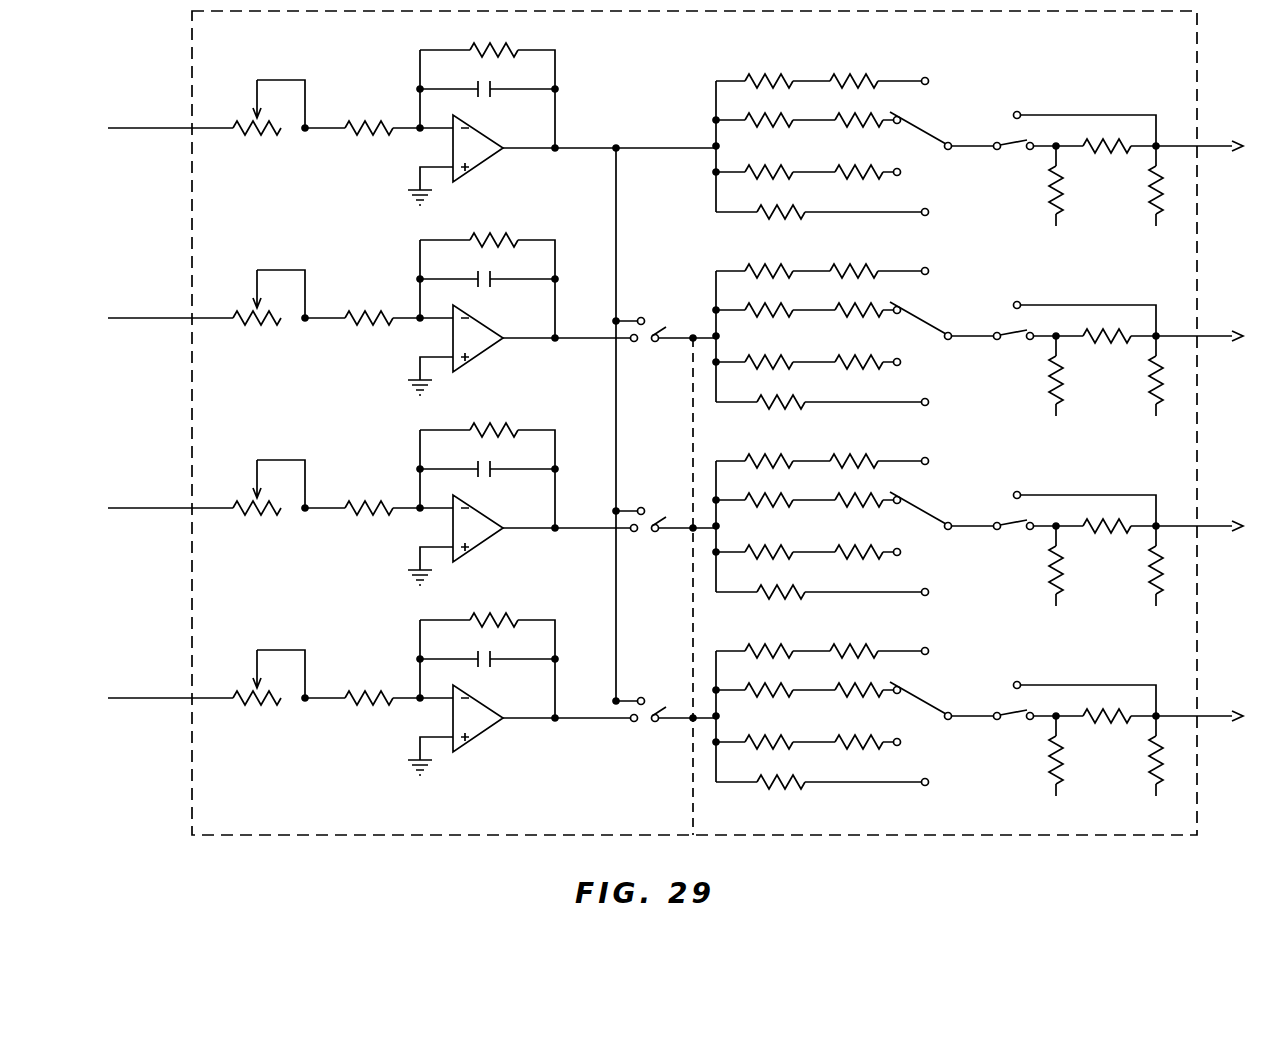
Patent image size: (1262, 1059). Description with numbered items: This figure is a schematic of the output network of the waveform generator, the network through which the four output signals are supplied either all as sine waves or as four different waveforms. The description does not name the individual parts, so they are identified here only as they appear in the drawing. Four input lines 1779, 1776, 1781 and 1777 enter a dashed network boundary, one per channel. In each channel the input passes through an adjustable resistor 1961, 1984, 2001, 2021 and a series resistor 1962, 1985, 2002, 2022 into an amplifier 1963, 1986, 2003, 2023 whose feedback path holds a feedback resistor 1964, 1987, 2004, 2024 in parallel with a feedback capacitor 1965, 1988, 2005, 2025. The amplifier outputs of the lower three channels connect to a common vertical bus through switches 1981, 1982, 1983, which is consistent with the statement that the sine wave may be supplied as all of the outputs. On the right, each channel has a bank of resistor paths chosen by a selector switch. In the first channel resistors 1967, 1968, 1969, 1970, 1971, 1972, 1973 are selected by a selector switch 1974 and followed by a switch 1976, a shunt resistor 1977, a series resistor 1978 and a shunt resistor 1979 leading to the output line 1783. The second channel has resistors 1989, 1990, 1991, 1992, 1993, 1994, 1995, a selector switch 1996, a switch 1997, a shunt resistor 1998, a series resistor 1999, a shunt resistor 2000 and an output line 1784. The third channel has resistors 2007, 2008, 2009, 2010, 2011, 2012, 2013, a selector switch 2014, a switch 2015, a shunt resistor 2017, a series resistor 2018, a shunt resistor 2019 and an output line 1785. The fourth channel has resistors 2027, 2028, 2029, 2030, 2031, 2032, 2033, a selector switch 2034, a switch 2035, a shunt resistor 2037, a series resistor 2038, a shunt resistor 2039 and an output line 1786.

The input line 1779 is at (156, 127).
The input line 1776 is at (158, 317).
The input line 1781 is at (158, 507).
The input line 1777 is at (158, 697).
The potentiometer 1961 is at (254, 133).
The potentiometer 1984 is at (260, 326).
The potentiometer 2001 is at (260, 516).
The potentiometer 2021 is at (266, 706).
The resistor 1962 is at (365, 134).
The resistor 1985 is at (365, 327).
The resistor 2002 is at (366, 502).
The resistor 2022 is at (366, 692).
The operational amplifier 1963 is at (492, 158).
The operational amplifier 1986 is at (487, 350).
The operational amplifier 2003 is at (482, 540).
The operational amplifier 2023 is at (484, 738).
The feedback resistor 1964 is at (490, 43).
The feedback resistor 1987 is at (508, 237).
The feedback resistor 2004 is at (492, 423).
The feedback resistor 2024 is at (494, 614).
The feedback capacitor 1965 is at (490, 93).
The feedback capacitor 1988 is at (490, 288).
The feedback capacitor 2005 is at (488, 479).
The feedback capacitor 2025 is at (490, 668).
The resistor 1967 is at (783, 73).
The resistor 1968 is at (869, 73).
The resistor 1969 is at (790, 118).
The resistor 1970 is at (874, 118).
The resistor 1971 is at (792, 170).
The resistor 1972 is at (882, 170).
The resistor 1973 is at (792, 210).
The selector switch 1974 is at (924, 138).
The switch 1976 is at (1010, 152).
The shunt resistor 1977 is at (1054, 210).
The series resistor 1978 is at (1097, 148).
The shunt resistor 1979 is at (1152, 212).
The output line 1783 is at (1218, 148).
The resistor 1989 is at (788, 270).
The resistor 1990 is at (868, 270).
The resistor 1991 is at (792, 309).
The resistor 1992 is at (880, 309).
The resistor 1993 is at (794, 360).
The resistor 1994 is at (882, 360).
The resistor 1995 is at (790, 400).
The selector switch 1996 is at (920, 328).
The switch 1997 is at (1010, 342).
The shunt resistor 1998 is at (1050, 398).
The series resistor 1999 is at (1099, 340).
The shunt resistor 2000 is at (1152, 398).
The output line 1784 is at (1220, 338).
The switch 1981 is at (652, 334).
The resistor 2007 is at (778, 459).
The resistor 2008 is at (868, 459).
The resistor 2009 is at (780, 497).
The resistor 2010 is at (865, 497).
The resistor 2011 is at (788, 549).
The resistor 2012 is at (878, 549).
The resistor 2013 is at (790, 590).
The selector switch 2014 is at (933, 515).
The switch 2015 is at (1008, 532).
The shunt resistor 2017 is at (1056, 590).
The series resistor 2018 is at (1097, 530).
The shunt resistor 2019 is at (1156, 590).
The output line 1785 is at (1220, 528).
The switch 1982 is at (656, 534).
The resistor 2027 is at (778, 650).
The resistor 2028 is at (868, 650).
The resistor 2029 is at (788, 689).
The resistor 2030 is at (876, 680).
The resistor 2031 is at (790, 741).
The resistor 2032 is at (877, 741).
The resistor 2033 is at (790, 781).
The selector switch 2034 is at (922, 708).
The switch 2035 is at (1010, 722).
The shunt resistor 2037 is at (1051, 782).
The series resistor 2038 is at (1099, 720).
The shunt resistor 2039 is at (1151, 782).
The output line 1786 is at (1220, 718).
The switch 1983 is at (656, 724).